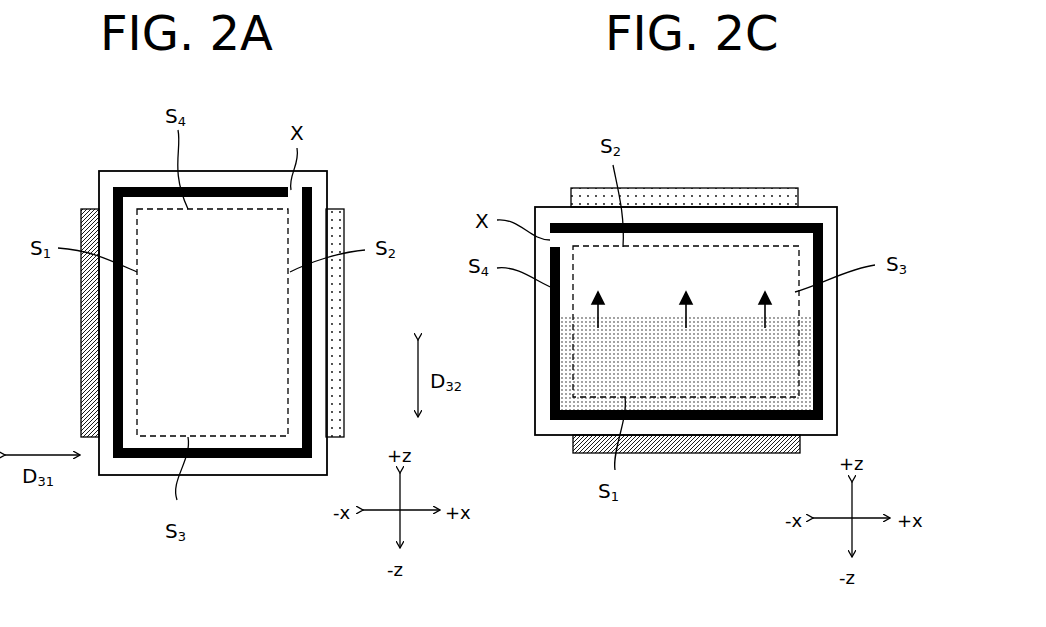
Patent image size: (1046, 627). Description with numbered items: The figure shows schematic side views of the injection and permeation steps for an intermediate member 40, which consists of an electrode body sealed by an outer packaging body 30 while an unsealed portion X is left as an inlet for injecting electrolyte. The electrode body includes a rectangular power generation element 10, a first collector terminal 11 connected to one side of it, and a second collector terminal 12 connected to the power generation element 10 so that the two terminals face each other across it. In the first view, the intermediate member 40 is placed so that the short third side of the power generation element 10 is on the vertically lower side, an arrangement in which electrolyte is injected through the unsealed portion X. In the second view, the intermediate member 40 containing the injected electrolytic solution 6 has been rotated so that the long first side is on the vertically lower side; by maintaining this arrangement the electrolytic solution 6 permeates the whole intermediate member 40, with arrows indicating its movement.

In FIG. 2A, the intermediate member 40 is at (227, 270).
In FIG. 2C, the intermediate member 40 is at (722, 302).
In FIG. 2A, the outer packaging body 30 is at (315, 193).
In FIG. 2C, the outer packaging body 30 is at (830, 226).
In FIG. 2A, the power generation element 10 is at (270, 300).
In FIG. 2C, the power generation element 10 is at (795, 318).
In FIG. 2A, the first collector terminal 11 is at (88, 345).
In FIG. 2C, the first collector terminal 11 is at (690, 453).
In FIG. 2A, the second collector terminal 12 is at (335, 338).
In FIG. 2C, the second collector terminal 12 is at (683, 197).
In FIG. 2C, the electrolytic solution 6 is at (795, 375).